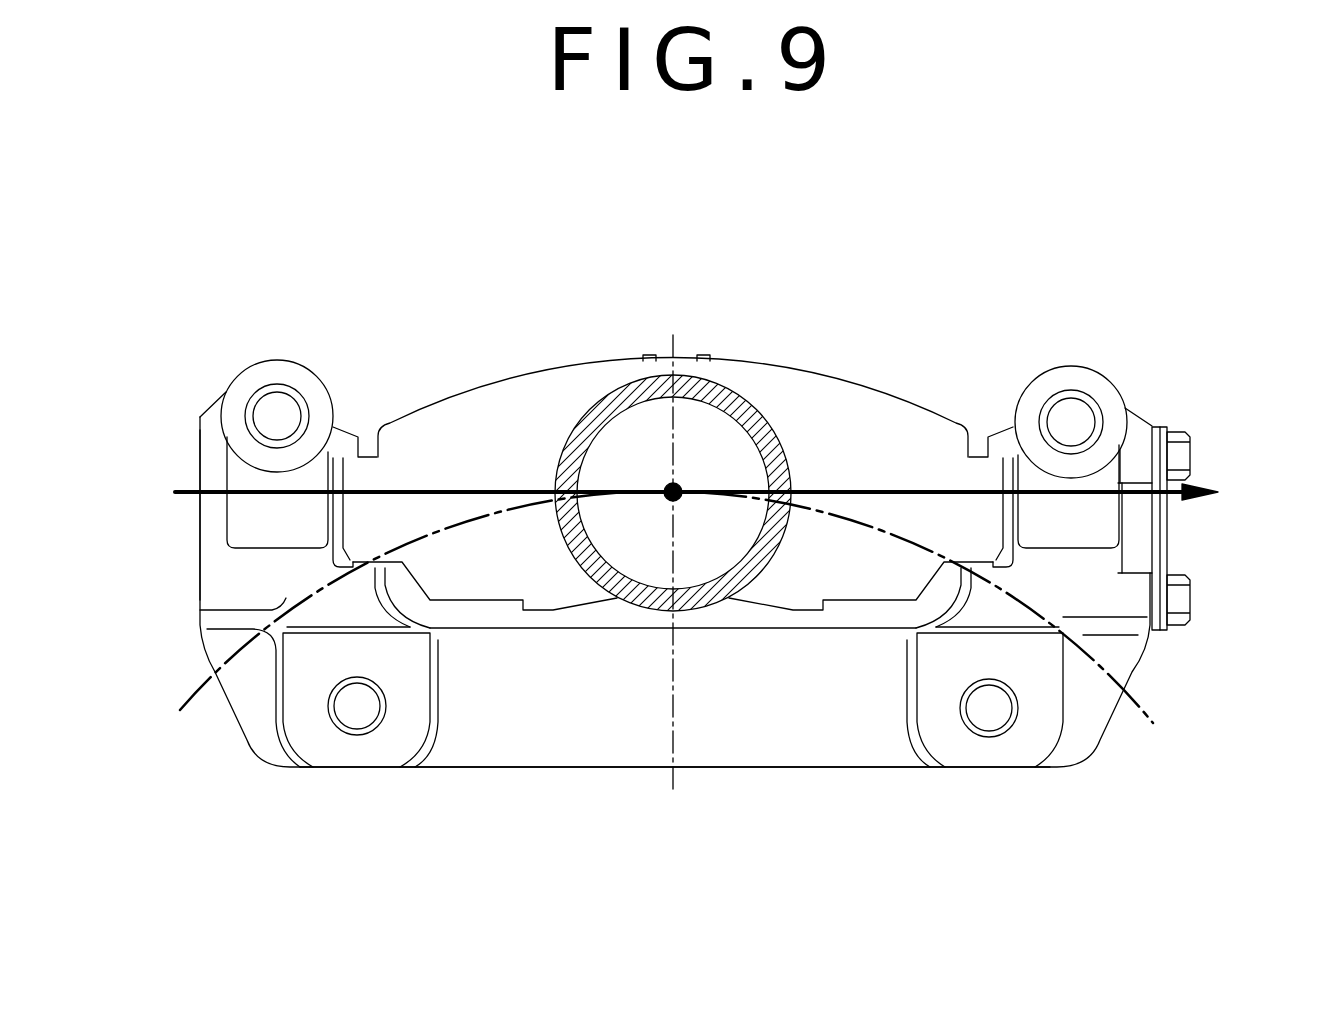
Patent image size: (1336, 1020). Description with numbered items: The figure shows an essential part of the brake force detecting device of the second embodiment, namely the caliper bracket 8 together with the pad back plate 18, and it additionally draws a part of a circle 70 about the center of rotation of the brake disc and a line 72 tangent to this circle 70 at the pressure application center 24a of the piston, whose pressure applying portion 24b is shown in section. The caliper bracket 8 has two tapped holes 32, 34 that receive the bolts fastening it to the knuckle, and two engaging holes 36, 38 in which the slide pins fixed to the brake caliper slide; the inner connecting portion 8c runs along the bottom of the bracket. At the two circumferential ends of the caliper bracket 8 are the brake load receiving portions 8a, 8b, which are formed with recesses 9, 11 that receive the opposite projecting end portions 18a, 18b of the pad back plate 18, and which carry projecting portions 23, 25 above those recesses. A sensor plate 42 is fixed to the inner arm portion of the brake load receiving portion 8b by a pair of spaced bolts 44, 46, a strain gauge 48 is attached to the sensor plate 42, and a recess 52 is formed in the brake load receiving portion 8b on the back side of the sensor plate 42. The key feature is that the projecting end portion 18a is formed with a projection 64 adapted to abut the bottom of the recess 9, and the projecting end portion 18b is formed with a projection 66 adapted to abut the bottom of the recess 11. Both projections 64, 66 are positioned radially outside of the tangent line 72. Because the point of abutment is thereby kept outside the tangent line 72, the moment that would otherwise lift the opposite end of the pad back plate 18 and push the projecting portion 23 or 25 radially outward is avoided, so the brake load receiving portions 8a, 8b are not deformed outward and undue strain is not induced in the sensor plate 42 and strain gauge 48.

The caliper bracket 8 is at (698, 790).
The brake load receiving portion 8a is at (205, 503).
The brake load receiving portion 8b is at (1128, 418).
The inner connecting portion 8c is at (563, 757).
The recess 9 is at (357, 550).
The recess 11 is at (1000, 553).
The pad back plate 18 is at (738, 365).
The projecting end portion 18a is at (365, 548).
The projecting end portion 18b is at (990, 570).
The projecting portion 23 is at (350, 433).
The projecting portion 25 is at (1005, 432).
The pressure application center 24a is at (682, 488).
The pressure applying portion 24b is at (620, 392).
The tapped hole 32 is at (357, 723).
The tapped hole 34 is at (988, 725).
The engaging hole 36 is at (259, 368).
The engaging hole 38 is at (1063, 372).
The sensor plate 42 is at (1157, 558).
The bolt 44 is at (1190, 440).
The bolt 46 is at (1180, 610).
The strain gauge 48 is at (1170, 528).
The recess 52 is at (1140, 500).
The projection 64 is at (330, 480).
The projection 66 is at (1023, 480).
The circle 70 is at (1150, 705).
The tangent line 72 is at (855, 488).